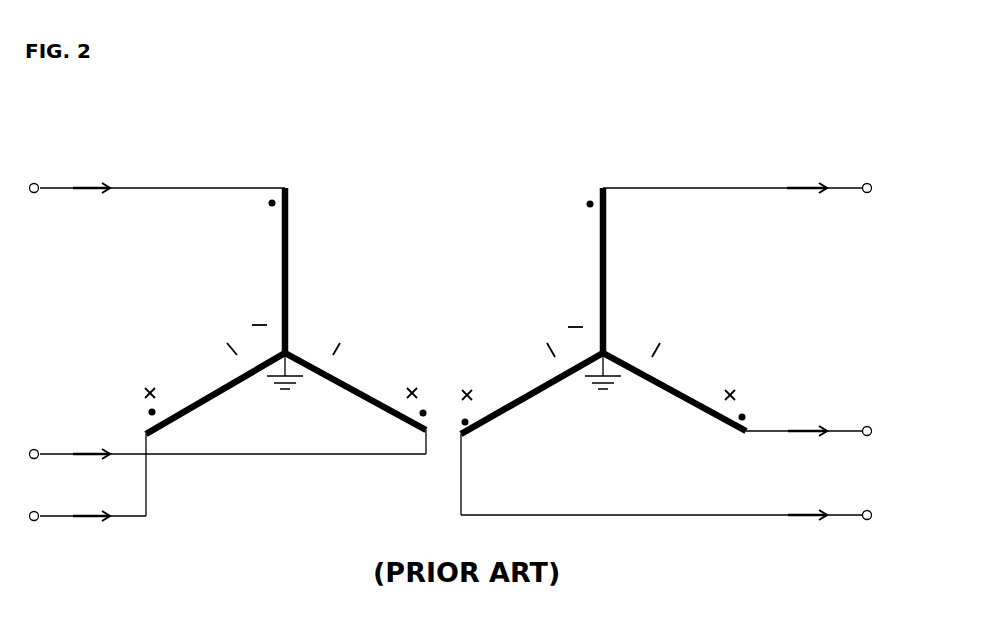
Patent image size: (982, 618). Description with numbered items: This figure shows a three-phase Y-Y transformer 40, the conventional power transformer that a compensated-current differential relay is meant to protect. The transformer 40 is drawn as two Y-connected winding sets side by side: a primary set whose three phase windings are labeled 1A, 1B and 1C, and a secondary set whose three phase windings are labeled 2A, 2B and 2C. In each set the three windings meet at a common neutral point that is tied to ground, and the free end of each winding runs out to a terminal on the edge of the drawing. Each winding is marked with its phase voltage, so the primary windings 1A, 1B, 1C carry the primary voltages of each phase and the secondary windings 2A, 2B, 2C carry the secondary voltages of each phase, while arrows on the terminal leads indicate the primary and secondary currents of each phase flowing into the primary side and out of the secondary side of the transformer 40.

The three-phase Y-Y transformer 40 is at (451, 303).
The primary winding phase A 1A is at (182, 268).
The primary winding phase B 1B is at (228, 401).
The primary winding phase C 1C is at (158, 432).
The secondary winding phase A 2A is at (712, 268).
The secondary winding phase B 2B is at (737, 402).
The secondary winding phase C 2C is at (666, 431).